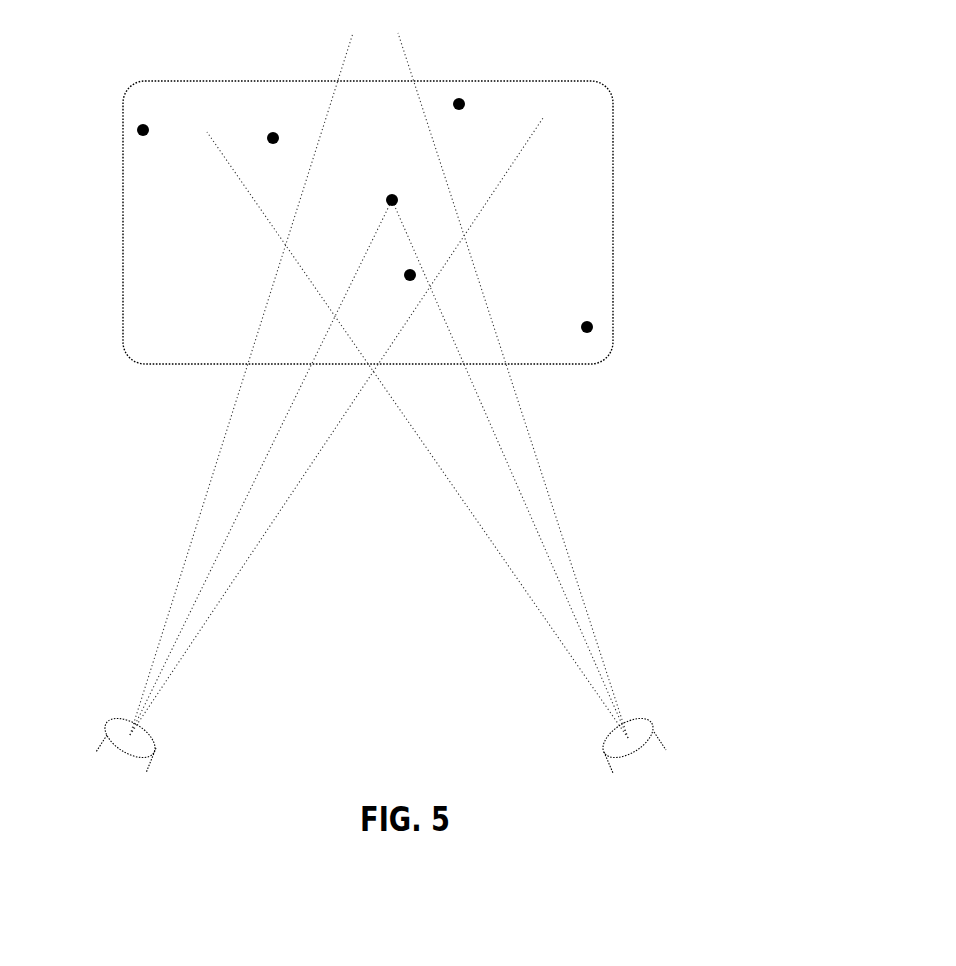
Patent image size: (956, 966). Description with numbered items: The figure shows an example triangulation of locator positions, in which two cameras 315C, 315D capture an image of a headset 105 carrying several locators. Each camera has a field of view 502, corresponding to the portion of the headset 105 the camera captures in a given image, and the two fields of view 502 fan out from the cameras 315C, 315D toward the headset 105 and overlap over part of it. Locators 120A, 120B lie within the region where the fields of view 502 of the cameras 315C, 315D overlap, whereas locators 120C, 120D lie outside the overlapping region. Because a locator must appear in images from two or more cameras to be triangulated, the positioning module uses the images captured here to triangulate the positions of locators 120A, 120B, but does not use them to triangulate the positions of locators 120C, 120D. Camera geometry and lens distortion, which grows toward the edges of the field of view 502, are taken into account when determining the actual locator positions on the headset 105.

The headset 105 is at (575, 80).
The locator 120A is at (390, 194).
The locator 120B is at (405, 280).
The locator 120C is at (271, 132).
The locator 120D is at (586, 321).
The field of view 502 is at (240, 442).
The camera 315C is at (112, 766).
The camera 315D is at (643, 763).